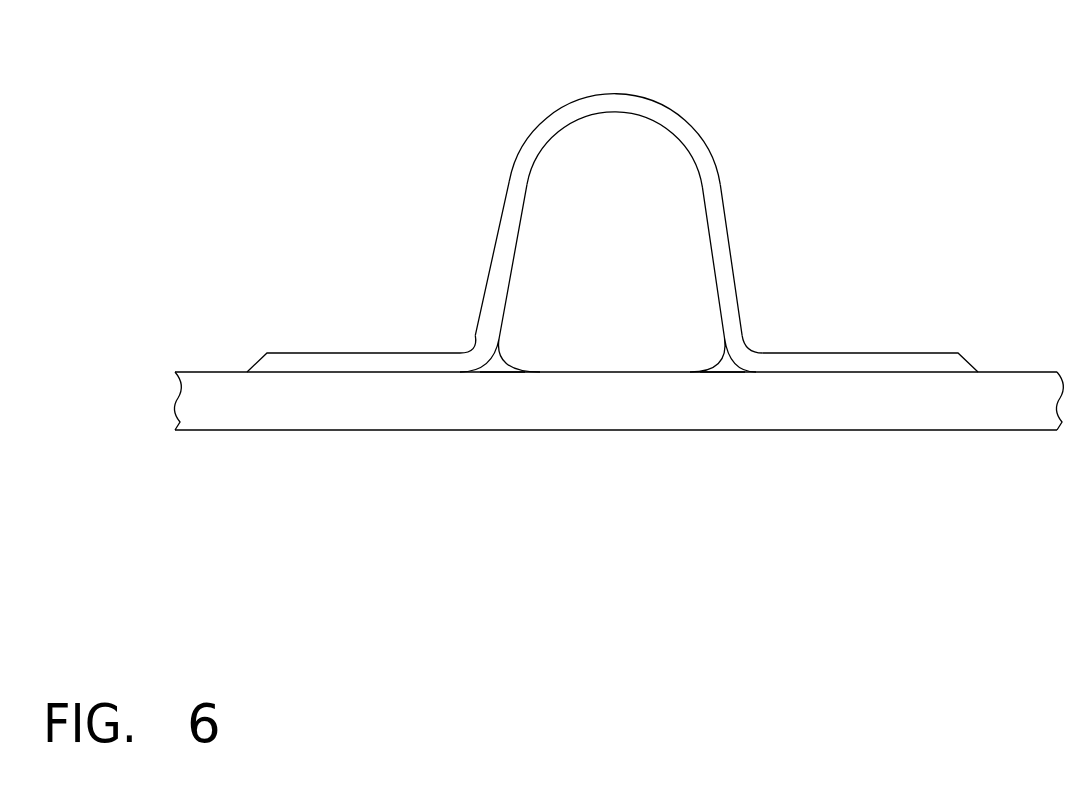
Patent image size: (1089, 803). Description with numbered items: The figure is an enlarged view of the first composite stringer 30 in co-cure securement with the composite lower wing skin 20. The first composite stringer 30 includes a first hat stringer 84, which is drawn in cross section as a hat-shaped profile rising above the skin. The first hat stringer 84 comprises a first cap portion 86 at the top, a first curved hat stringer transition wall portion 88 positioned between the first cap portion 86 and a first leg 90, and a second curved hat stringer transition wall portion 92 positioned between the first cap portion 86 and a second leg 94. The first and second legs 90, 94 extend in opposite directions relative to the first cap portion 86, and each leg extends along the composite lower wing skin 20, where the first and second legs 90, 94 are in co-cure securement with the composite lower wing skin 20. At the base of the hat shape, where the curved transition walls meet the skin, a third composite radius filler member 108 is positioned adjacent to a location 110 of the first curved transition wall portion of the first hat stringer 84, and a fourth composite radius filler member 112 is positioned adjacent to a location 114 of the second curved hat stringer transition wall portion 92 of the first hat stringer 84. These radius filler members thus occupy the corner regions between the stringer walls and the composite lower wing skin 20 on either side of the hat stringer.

The composite lower wing skin 20 is at (572, 418).
The first composite stringer 30 is at (650, 78).
The first hat stringer 84 is at (708, 138).
The first cap portion 86 is at (733, 200).
The first curved hat stringer transition wall portion 88 is at (475, 340).
The first leg 90 is at (348, 353).
The second curved hat stringer transition wall portion 92 is at (752, 342).
The second leg 94 is at (877, 353).
The third composite radius filler member 108 is at (505, 362).
The location 110 is at (503, 374).
The fourth composite radius filler member 112 is at (723, 357).
The location 114 is at (723, 374).